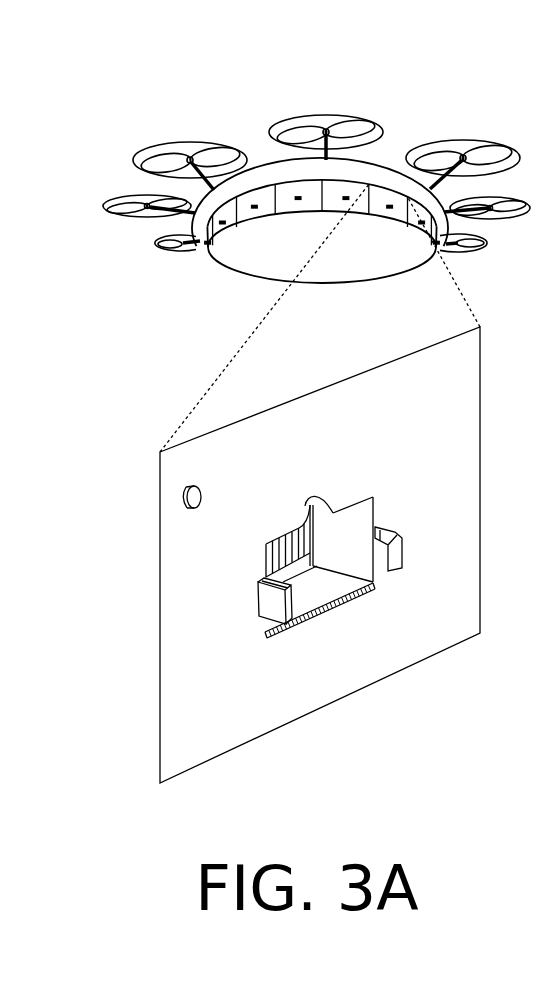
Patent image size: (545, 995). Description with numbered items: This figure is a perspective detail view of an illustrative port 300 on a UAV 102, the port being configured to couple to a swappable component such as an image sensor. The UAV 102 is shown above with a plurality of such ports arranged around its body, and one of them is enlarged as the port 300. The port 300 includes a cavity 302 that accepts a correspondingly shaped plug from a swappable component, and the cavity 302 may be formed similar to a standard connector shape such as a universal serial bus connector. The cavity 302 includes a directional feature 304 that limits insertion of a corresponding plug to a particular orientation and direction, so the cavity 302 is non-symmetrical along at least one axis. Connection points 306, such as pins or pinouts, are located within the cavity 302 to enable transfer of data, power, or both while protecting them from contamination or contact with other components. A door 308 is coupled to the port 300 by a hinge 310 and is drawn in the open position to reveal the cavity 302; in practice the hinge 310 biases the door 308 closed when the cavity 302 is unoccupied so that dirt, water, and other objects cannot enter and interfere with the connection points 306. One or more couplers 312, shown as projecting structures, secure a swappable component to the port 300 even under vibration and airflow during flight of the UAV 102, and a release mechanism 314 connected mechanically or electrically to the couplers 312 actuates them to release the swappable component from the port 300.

The UAV 102 is at (263, 163).
The port 300 is at (191, 364).
The cavity 302 is at (352, 518).
The directional feature 304 is at (318, 498).
The connection points 306 is at (287, 556).
The door 308 is at (312, 592).
The hinge 310 is at (268, 641).
The couplers 312 is at (257, 598).
The release mechanism 314 is at (181, 496).